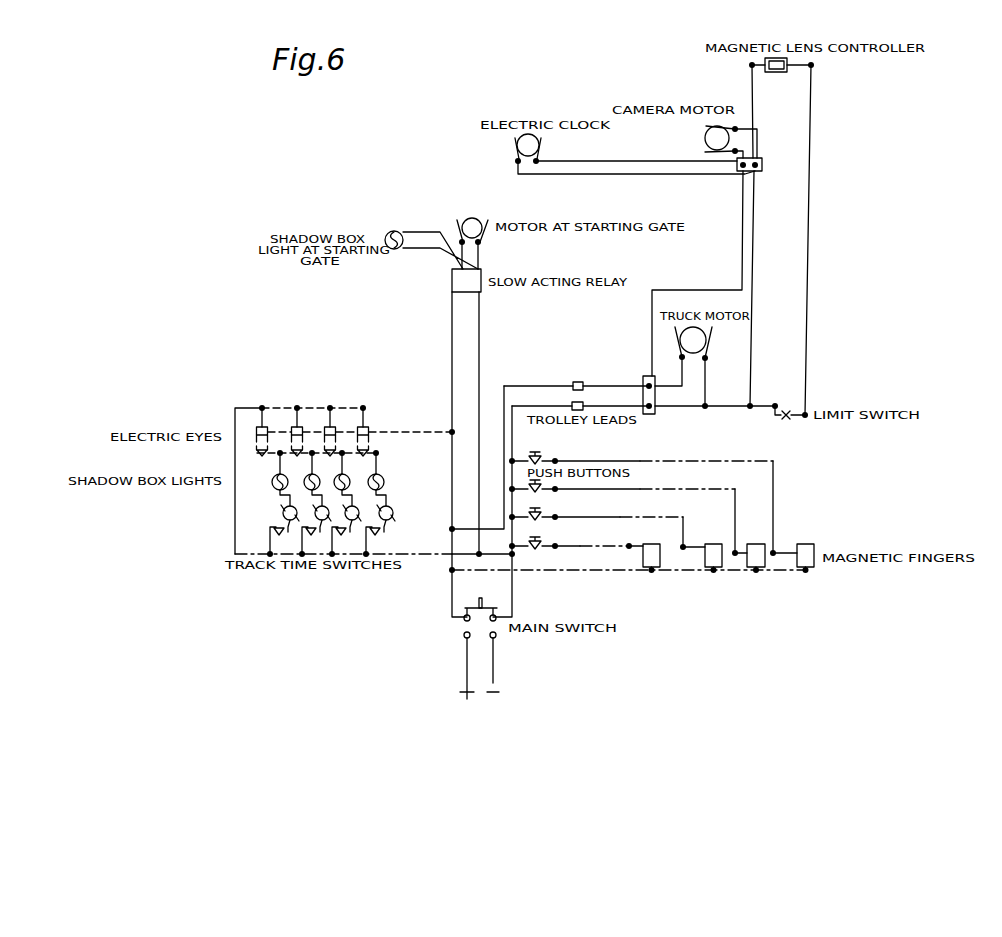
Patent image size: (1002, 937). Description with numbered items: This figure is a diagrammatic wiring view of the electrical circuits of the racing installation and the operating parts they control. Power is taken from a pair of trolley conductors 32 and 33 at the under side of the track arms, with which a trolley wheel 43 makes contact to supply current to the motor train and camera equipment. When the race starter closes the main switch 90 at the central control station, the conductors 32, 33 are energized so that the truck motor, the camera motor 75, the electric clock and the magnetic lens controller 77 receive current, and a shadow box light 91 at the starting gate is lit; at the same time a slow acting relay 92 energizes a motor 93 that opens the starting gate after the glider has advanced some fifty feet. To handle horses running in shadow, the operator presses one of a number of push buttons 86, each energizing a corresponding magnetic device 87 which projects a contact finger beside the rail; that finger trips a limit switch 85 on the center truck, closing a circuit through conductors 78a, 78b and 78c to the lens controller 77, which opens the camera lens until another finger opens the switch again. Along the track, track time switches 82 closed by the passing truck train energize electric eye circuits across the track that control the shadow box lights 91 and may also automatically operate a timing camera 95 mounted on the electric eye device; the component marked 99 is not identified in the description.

The conductor 32 is at (452, 388).
The conductor 33 is at (480, 358).
The trolley wheel 43 is at (576, 374).
The camera motor 75 is at (705, 136).
The magnetic lens controller 77 is at (774, 73).
The conductor 78a is at (755, 99).
The conductor 78b is at (754, 252).
The conductor 78c is at (812, 118).
The track time limit switch 82 is at (277, 527).
The limit switch 85 is at (792, 422).
The push button 86 is at (547, 457).
The magnetic device 87 is at (640, 568).
The main switch 90 is at (461, 631).
The shadow box light 91 is at (391, 252).
The slow acting relay 92 is at (452, 284).
The motor 93 is at (470, 215).
The timing camera 95 is at (394, 512).
The trolley lead contact 99 is at (584, 401).